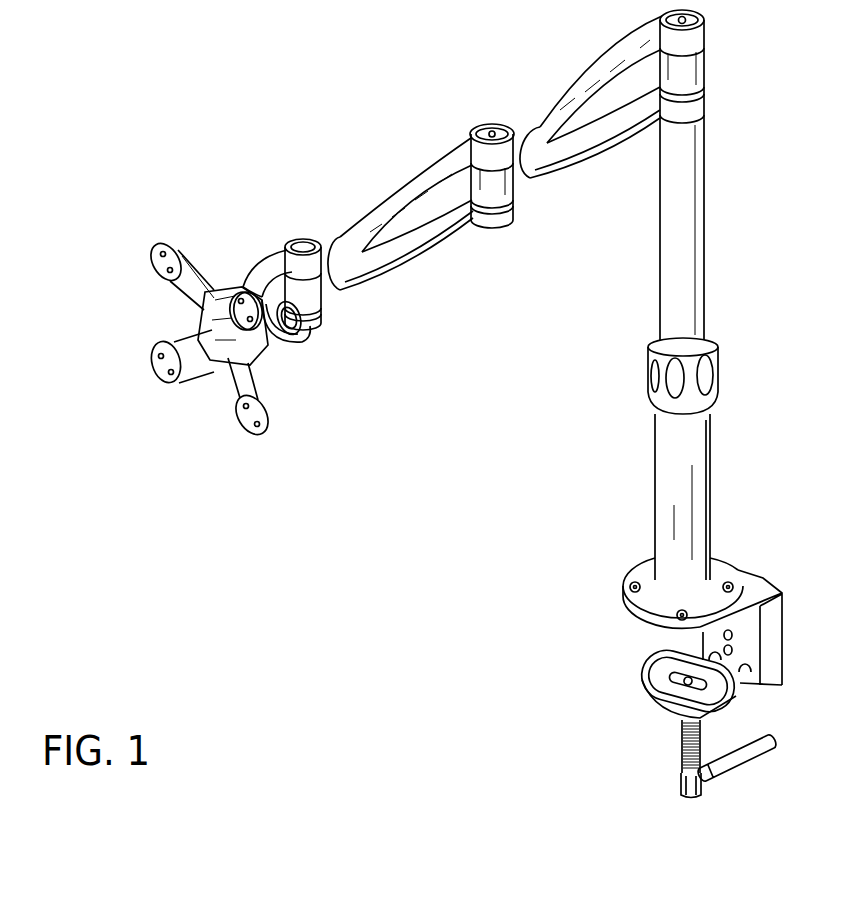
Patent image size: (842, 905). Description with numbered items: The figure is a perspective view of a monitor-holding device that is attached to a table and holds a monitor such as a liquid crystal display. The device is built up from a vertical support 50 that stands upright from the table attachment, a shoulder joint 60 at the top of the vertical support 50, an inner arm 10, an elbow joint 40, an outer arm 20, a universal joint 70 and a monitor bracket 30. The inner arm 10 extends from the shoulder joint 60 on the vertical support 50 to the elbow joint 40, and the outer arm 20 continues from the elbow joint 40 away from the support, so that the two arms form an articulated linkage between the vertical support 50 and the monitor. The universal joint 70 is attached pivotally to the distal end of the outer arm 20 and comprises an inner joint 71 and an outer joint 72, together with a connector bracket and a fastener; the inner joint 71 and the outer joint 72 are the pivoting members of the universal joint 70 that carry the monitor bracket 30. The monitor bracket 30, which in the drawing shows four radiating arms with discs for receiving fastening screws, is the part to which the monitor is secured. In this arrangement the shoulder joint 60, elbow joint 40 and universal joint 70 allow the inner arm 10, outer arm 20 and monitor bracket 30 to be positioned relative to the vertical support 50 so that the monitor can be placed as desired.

The inner arm 10 is at (552, 90).
The outer arm 20 is at (361, 206).
The monitor bracket 30 is at (188, 320).
The elbow joint 40 is at (481, 116).
The vertical support 50 is at (706, 209).
The shoulder joint 60 is at (712, 13).
The universal joint 70 is at (286, 226).
The inner joint 71 is at (322, 327).
The outer joint 72 is at (270, 335).